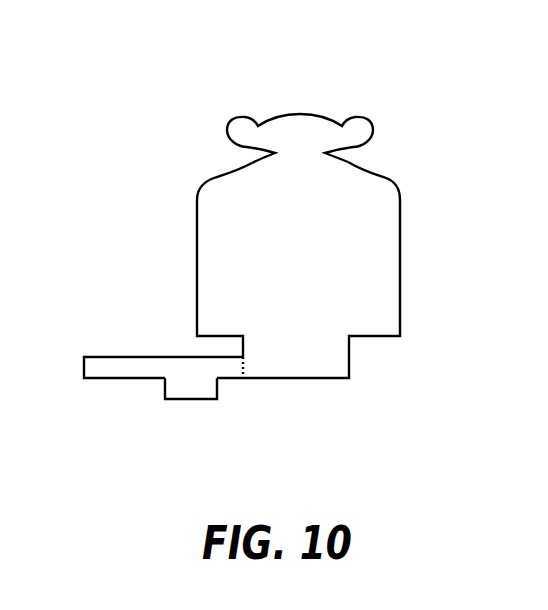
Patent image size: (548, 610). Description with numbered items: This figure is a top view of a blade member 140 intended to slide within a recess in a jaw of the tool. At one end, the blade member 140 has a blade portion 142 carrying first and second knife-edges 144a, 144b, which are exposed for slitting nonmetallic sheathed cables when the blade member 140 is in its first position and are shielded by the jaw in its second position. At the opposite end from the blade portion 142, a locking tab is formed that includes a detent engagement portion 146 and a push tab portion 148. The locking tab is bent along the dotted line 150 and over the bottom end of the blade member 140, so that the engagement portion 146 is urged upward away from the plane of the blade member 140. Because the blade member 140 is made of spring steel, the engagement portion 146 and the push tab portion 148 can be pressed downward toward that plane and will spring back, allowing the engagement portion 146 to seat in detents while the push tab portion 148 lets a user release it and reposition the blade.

The blade member 140 is at (390, 207).
The blade portion 142 is at (303, 125).
The first knife-edge 144a is at (345, 157).
The second knife-edge 144b is at (253, 157).
The detent engagement portion 146 is at (108, 362).
The push tab portion 148 is at (180, 392).
The dotted line 150 is at (243, 382).